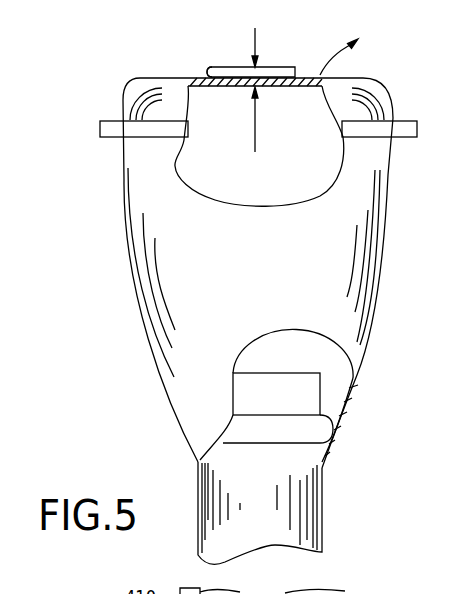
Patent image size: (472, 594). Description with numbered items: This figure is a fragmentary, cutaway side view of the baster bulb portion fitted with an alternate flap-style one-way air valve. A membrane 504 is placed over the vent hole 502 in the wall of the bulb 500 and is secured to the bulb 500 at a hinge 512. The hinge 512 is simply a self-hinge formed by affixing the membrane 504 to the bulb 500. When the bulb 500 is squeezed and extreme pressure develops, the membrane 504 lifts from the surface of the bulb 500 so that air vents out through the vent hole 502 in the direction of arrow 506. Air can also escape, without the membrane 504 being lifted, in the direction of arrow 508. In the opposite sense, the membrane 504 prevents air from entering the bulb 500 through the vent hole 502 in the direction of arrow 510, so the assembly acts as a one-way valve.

The bulb 500 is at (157, 195).
The vent hole 502 is at (252, 82).
The membrane 504 is at (277, 64).
The arrow 506 is at (254, 140).
The arrow 508 is at (322, 81).
The arrow 510 is at (254, 48).
The hinge 512 is at (208, 75).